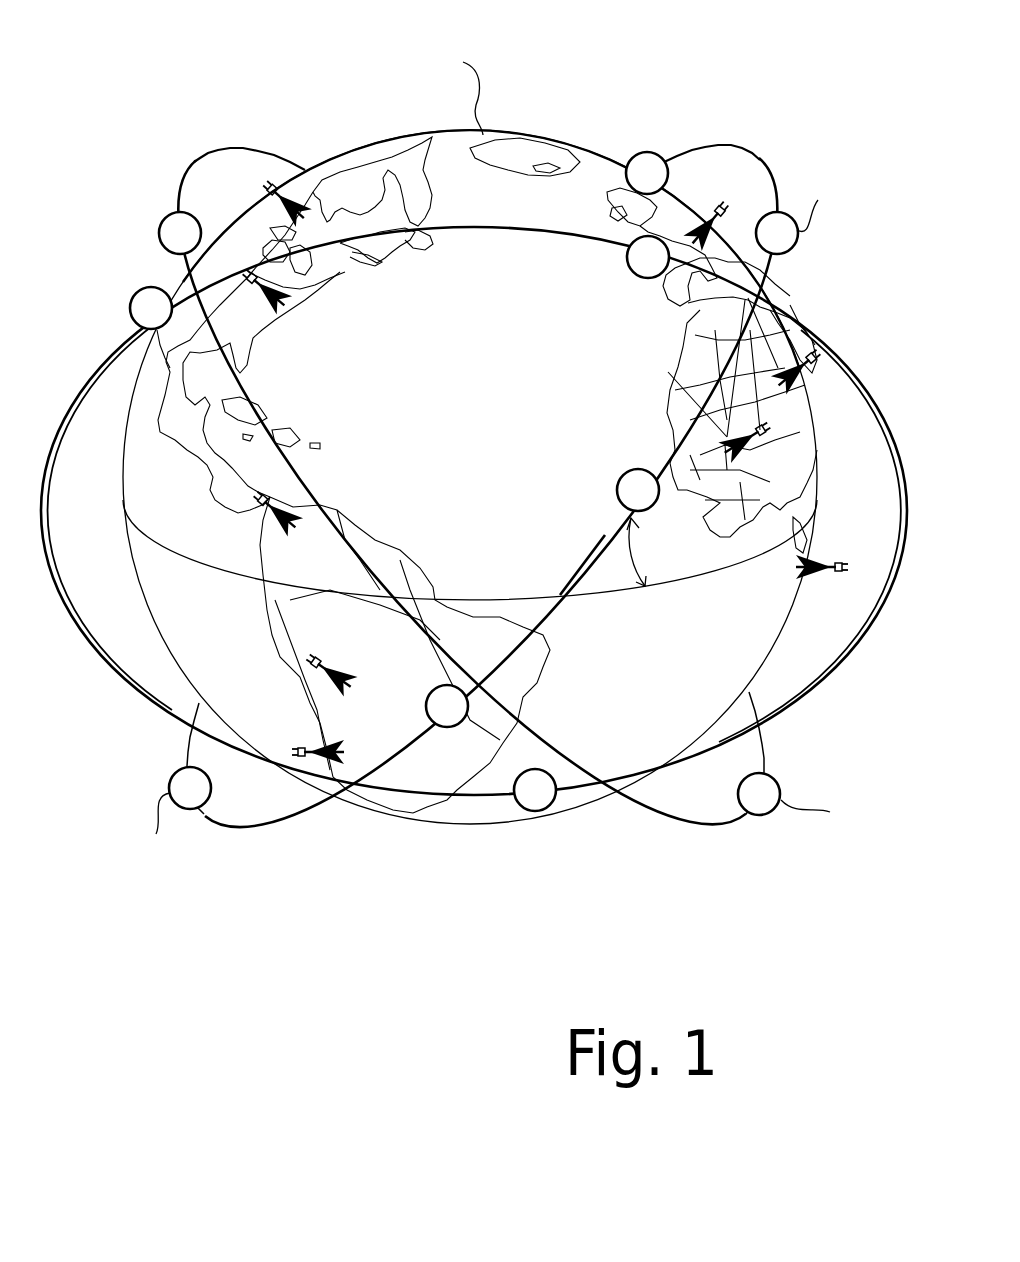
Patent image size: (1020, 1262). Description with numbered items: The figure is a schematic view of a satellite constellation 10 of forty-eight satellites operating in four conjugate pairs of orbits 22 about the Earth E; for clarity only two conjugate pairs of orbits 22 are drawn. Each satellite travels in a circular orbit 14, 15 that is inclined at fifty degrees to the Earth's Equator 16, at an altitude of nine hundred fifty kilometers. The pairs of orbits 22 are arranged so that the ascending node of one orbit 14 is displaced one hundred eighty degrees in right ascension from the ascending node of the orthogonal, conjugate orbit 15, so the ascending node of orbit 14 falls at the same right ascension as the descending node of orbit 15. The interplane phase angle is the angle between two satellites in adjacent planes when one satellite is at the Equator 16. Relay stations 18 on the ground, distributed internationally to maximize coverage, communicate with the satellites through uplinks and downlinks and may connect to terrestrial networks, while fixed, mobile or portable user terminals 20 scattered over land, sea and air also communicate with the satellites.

The constellation 10 is at (709, 47).
The orbit 14 is at (507, 237).
The conjugate orbit 15 is at (458, 796).
The Equator 16 is at (556, 596).
The relay stations 18 is at (268, 192).
The user terminals 20 is at (354, 286).
The pairs of orbits 22 is at (562, 625).